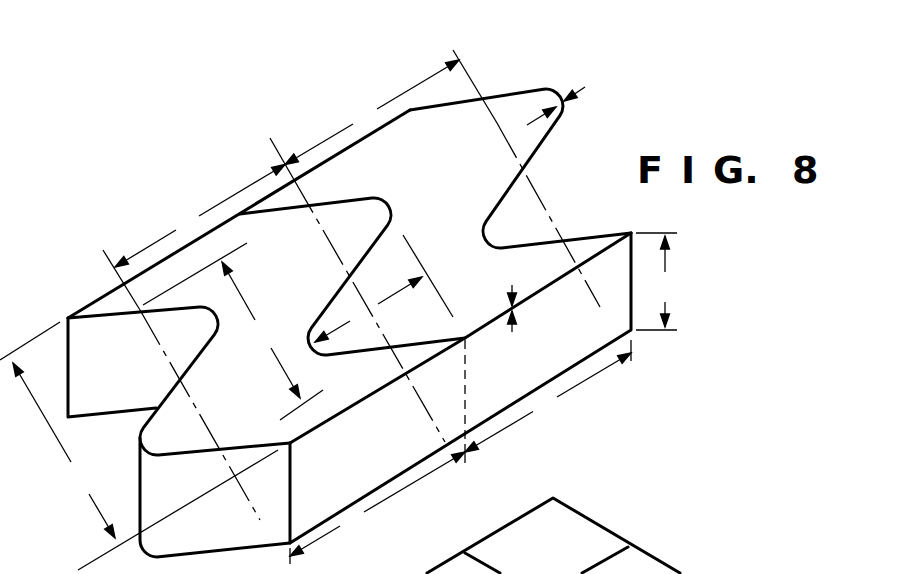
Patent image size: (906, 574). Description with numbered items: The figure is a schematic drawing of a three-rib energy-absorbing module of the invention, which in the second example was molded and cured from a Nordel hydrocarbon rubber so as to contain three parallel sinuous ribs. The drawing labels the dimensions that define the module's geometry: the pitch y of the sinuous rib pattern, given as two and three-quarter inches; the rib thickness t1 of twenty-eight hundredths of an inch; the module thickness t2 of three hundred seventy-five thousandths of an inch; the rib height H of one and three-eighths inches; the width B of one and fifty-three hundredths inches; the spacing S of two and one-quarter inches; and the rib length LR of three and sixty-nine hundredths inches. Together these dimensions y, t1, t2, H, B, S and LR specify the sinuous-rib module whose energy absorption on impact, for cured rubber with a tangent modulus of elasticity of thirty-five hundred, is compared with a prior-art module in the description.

The rib pitch dimension y is at (373, 312).
The rib thickness dimension t1 is at (561, 106).
The module thickness dimension t2 is at (523, 308).
The rib height dimension H is at (384, 288).
The rib width dimension B is at (233, 331).
The rib spacing dimension S is at (139, 446).
The rib length dimension LR is at (657, 281).